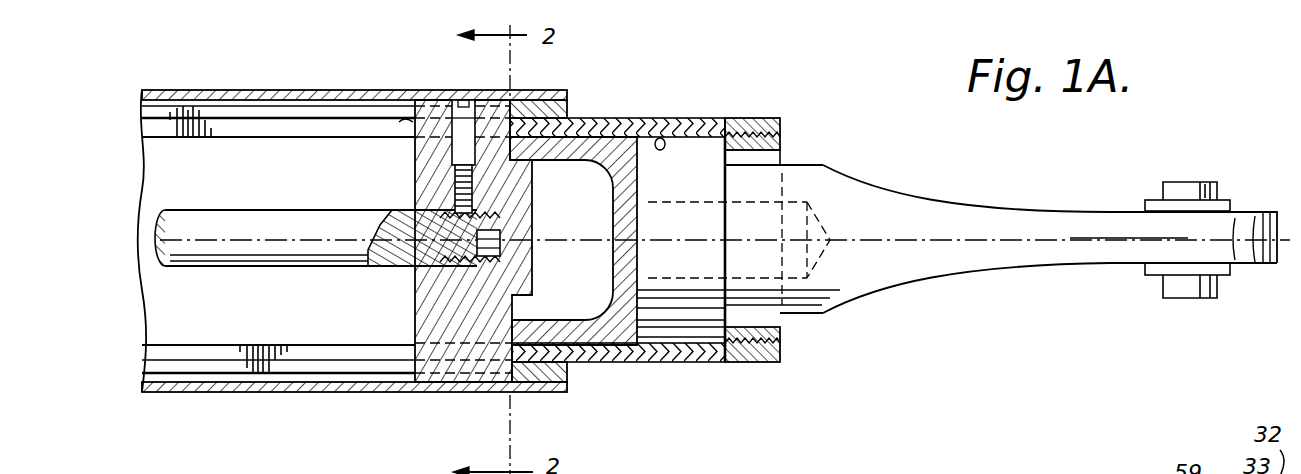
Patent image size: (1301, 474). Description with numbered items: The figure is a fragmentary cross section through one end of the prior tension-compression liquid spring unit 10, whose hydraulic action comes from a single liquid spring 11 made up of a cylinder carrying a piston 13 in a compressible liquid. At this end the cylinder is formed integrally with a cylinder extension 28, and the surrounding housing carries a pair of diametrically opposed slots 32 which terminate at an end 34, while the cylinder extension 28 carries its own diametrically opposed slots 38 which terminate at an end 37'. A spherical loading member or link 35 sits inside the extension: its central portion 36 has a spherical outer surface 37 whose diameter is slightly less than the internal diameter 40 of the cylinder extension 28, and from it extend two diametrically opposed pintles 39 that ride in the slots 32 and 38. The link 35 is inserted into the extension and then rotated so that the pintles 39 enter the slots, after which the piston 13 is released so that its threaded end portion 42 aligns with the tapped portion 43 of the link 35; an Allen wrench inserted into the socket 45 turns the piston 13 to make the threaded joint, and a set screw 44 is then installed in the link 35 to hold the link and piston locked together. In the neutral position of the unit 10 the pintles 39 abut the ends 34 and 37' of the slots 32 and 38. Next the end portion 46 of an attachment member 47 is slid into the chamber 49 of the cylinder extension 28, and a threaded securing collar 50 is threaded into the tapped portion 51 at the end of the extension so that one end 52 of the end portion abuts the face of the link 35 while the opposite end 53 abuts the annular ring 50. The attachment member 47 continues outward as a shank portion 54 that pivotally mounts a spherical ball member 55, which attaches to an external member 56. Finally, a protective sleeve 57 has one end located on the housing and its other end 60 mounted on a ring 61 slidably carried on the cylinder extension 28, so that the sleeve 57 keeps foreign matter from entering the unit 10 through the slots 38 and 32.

The liquid spring unit 10 is at (187, 68).
The liquid spring 11 is at (168, 172).
The piston 13 is at (170, 268).
The cylinder extension 28 is at (252, 118).
The slots 32 is at (342, 104).
The slot end 34 is at (502, 105).
The spherical loading member or link 35 is at (413, 292).
The central portion 36 is at (440, 312).
The spherical outer surface 37 is at (385, 191).
The slot end 37' is at (450, 420).
The slots 38 is at (282, 133).
The pintles 39 is at (413, 122).
The internal diameter 40 is at (213, 140).
The threaded end portion 42 is at (492, 272).
The tapped portion 43 is at (500, 234).
The set screw 44 is at (440, 197).
The socket 45 is at (500, 244).
The end portion 46 is at (670, 310).
The attachment member 47 is at (885, 188).
The chamber 49 is at (660, 138).
The threaded securing collar 50 is at (783, 335).
The tapped portion 51 is at (780, 140).
The end 52 is at (510, 172).
The end 53 is at (725, 176).
The shank portion 54 is at (1043, 262).
The spherical ball member 55 is at (1145, 205).
The external member 56 is at (1180, 298).
The protective sleeve 57 is at (142, 97).
The sleeve end 60 is at (560, 93).
The ring 61 is at (570, 104).